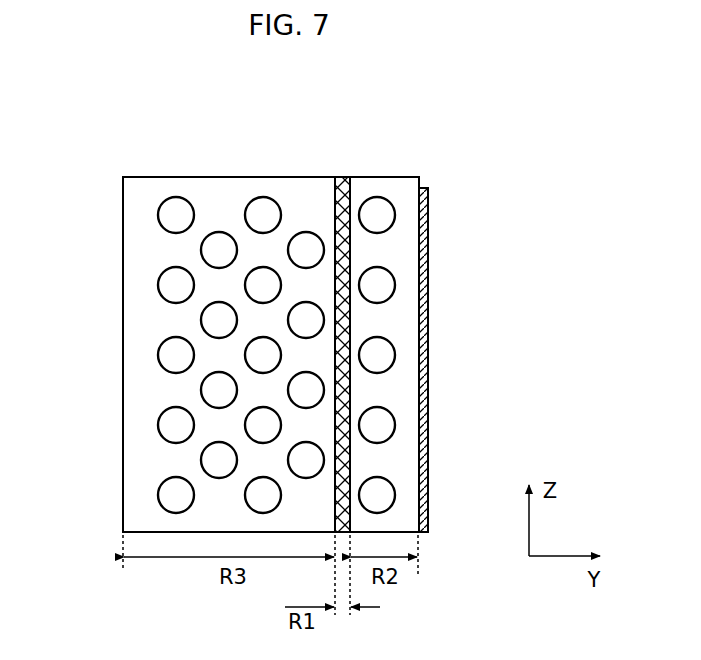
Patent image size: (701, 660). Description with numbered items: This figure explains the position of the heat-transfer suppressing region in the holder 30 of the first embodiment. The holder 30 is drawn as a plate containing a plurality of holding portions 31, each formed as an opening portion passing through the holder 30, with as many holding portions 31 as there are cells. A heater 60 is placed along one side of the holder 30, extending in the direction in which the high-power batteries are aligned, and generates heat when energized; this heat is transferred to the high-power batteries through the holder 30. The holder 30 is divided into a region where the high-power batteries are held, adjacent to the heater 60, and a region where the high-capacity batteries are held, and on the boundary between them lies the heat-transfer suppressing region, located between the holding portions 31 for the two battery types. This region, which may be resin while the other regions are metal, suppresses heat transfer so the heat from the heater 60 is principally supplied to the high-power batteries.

The holder 30 is at (392, 162).
The holding portion 31 is at (158, 215).
The heater 60 is at (428, 348).